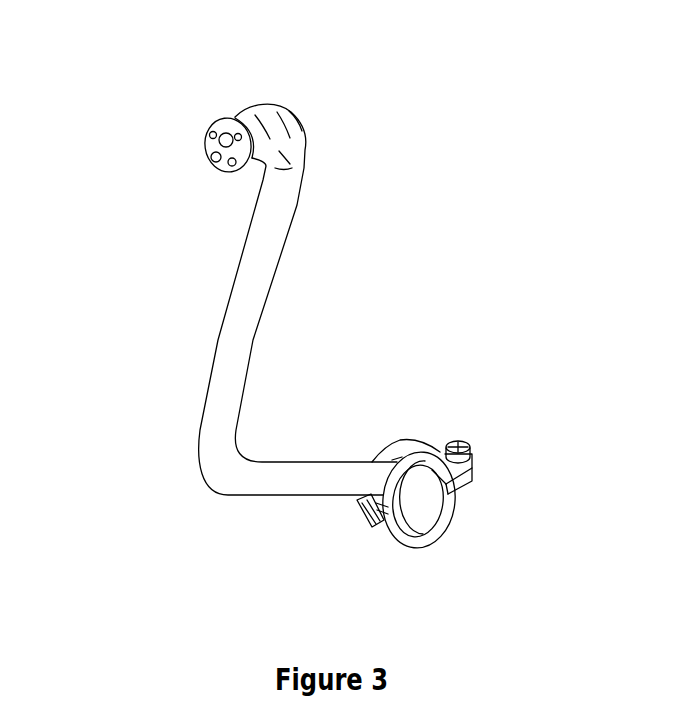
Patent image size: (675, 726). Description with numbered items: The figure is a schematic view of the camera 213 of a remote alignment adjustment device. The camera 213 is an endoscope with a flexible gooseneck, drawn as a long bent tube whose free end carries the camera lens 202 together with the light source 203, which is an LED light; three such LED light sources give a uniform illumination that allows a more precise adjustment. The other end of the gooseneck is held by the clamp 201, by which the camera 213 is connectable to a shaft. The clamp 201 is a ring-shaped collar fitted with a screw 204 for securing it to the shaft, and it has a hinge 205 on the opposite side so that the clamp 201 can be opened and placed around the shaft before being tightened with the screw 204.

The clamp 201 is at (413, 450).
The camera lens 202 is at (226, 136).
The light source 203 is at (210, 135).
The screw 204 is at (470, 447).
The hinge 205 is at (375, 525).
The camera 213 is at (252, 268).